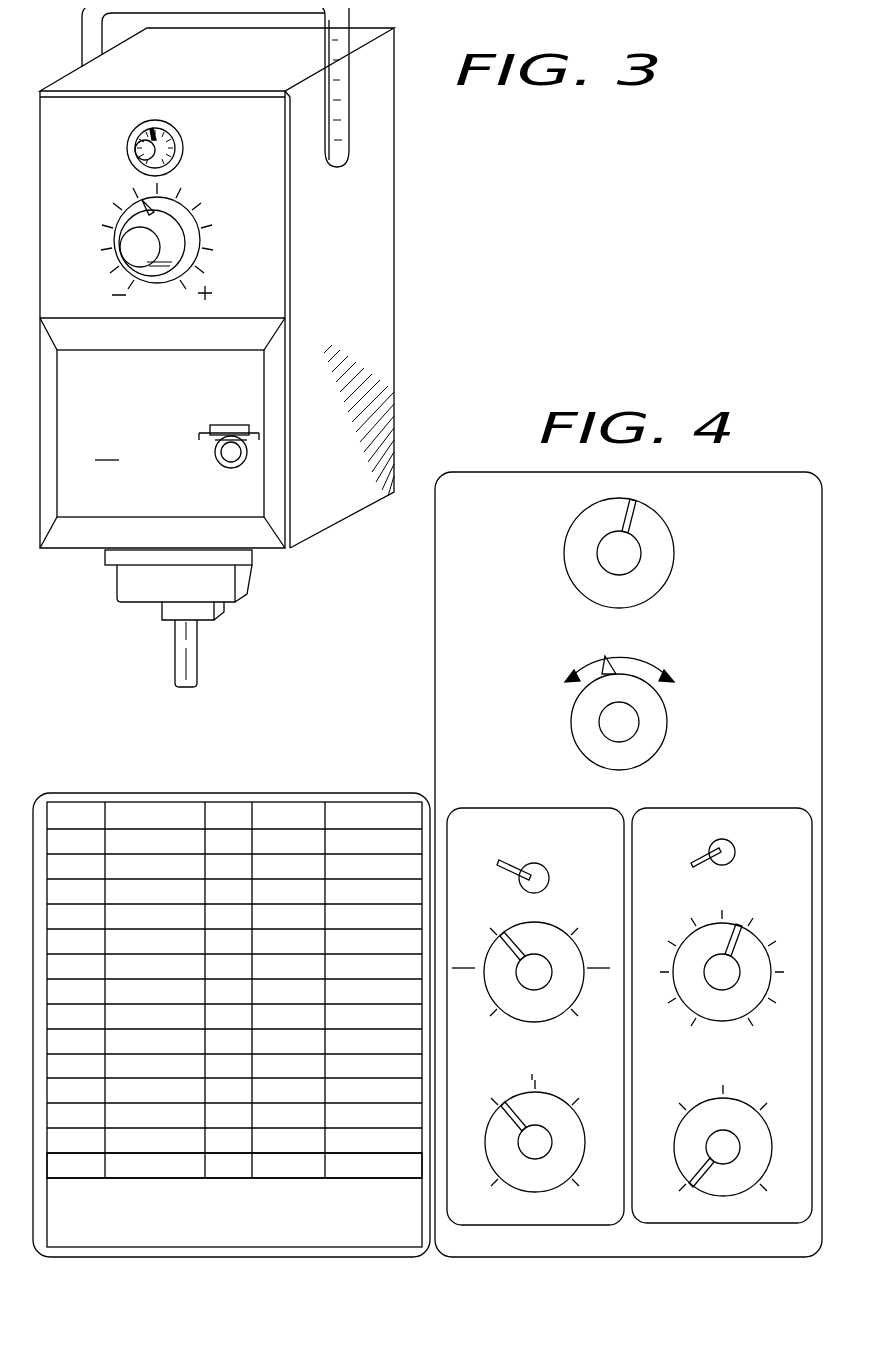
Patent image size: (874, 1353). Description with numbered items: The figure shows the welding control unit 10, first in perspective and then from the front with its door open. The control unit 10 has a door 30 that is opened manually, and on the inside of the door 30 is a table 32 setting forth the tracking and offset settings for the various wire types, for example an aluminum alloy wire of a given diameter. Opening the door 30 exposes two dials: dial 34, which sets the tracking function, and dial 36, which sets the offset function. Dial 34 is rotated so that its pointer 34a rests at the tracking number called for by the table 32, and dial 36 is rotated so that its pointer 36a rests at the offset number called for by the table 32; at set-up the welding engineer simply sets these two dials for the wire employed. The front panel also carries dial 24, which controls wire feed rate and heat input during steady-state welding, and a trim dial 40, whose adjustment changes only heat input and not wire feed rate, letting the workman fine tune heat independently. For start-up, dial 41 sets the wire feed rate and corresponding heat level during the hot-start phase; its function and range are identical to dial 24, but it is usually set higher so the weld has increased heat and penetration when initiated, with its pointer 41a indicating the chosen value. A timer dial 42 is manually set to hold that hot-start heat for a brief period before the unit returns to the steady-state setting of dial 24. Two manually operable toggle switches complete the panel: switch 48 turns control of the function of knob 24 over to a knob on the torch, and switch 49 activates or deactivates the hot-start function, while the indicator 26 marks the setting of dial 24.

In FIG. 3, the control unit 10 is at (353, 228).
In FIG. 4, the control unit 10 is at (418, 669).
In FIG. 3, the dial 24 is at (150, 176).
In FIG. 4, the dial 24 is at (573, 548).
In FIG. 3, the knob pointer indicator 26 is at (152, 128).
In FIG. 4, the knob pointer indicator 26 is at (630, 523).
In FIG. 3, the door 30 is at (166, 793).
In FIG. 3, the table 32 is at (307, 1162).
In FIG. 4, the dial 34 is at (500, 990).
In FIG. 4, the pointer 34a is at (543, 943).
In FIG. 4, the dial 36 is at (570, 1153).
In FIG. 4, the pointer 36a is at (497, 1147).
In FIG. 3, the trim dial 40 is at (187, 245).
In FIG. 4, the dial 41 is at (745, 993).
In FIG. 4, the heat knob pointer 41a is at (733, 950).
In FIG. 4, the timer dial 42 is at (708, 1183).
In FIG. 4, the toggle switch 48 is at (497, 862).
In FIG. 4, the toggle switch 49 is at (709, 845).